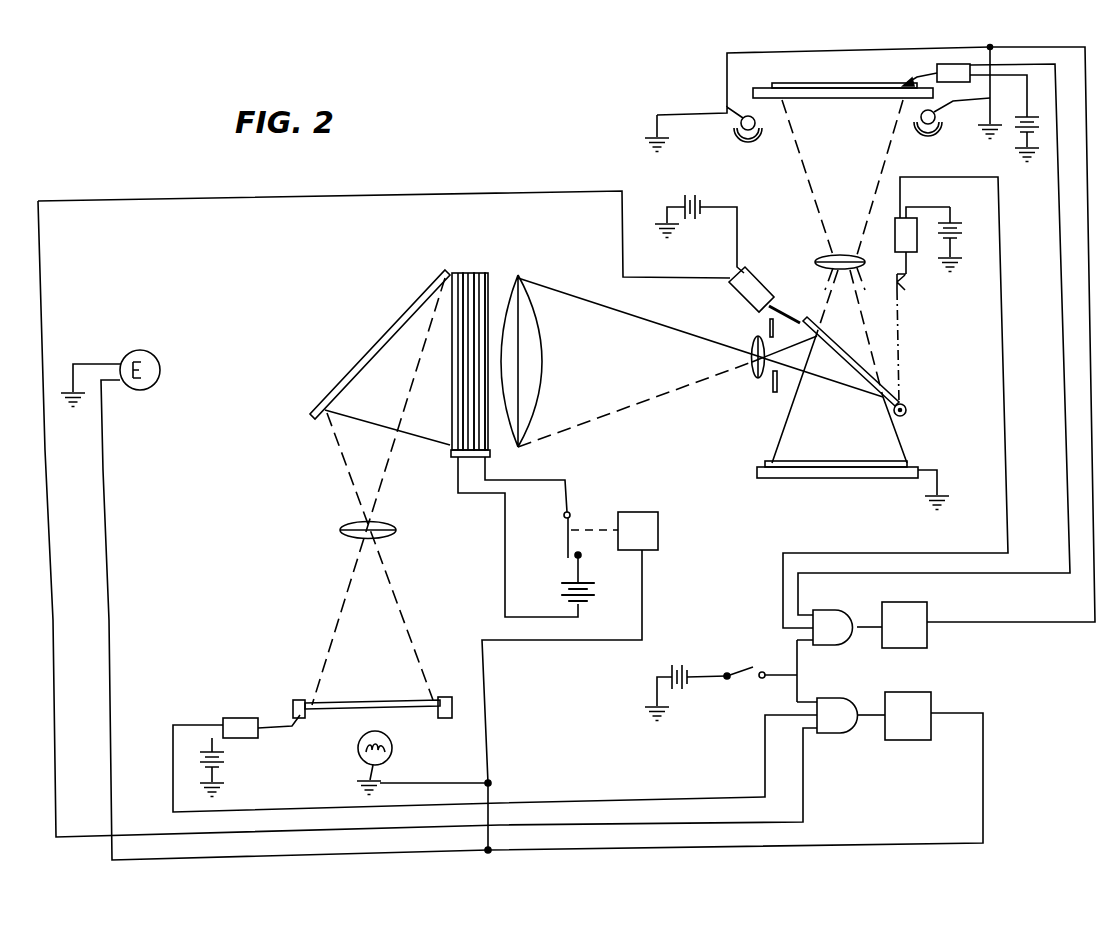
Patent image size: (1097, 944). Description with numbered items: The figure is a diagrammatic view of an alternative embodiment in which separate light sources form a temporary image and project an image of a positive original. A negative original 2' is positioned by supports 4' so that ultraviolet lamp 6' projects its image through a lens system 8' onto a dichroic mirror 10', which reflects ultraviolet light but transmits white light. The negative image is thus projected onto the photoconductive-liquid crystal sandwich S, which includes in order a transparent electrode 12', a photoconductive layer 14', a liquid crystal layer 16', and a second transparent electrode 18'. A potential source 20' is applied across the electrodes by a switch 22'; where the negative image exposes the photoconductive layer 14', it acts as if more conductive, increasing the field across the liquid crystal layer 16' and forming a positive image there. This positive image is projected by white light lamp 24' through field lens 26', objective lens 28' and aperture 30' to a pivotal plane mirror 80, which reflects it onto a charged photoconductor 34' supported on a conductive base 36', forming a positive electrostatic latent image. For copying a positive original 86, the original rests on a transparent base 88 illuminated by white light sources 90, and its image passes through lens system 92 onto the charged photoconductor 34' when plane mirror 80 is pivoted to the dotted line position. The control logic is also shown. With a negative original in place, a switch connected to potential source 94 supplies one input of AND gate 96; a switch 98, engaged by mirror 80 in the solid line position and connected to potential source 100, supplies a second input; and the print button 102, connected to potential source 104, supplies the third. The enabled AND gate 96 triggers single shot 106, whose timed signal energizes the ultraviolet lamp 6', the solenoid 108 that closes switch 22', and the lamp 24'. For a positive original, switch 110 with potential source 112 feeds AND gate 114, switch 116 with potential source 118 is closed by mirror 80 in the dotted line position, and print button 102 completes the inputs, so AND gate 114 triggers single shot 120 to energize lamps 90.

The negative original 2' is at (372, 680).
The supports 4' is at (371, 677).
The ultraviolet lamp 6' is at (422, 763).
The lens system 8' is at (375, 504).
The dichroic mirror 10' is at (380, 344).
The transparent electrode 12' is at (429, 341).
The photoconductive layer 14' is at (451, 335).
The liquid crystal layer 16' is at (483, 335).
The second transparent electrode 18' is at (487, 346).
The photoconductive-liquid crystal sandwich S is at (463, 258).
The potential source 20' is at (596, 589).
The switch 22' is at (565, 529).
The white light lamp 24' is at (132, 359).
The field lens 26' is at (550, 361).
The objective lens 28' is at (728, 343).
The aperture 30' is at (768, 373).
The charged photoconductor 34' is at (836, 442).
The conductive base 36' is at (853, 494).
The pivotal plane mirror 80 is at (897, 345).
The positive original 86 is at (810, 83).
The transparent base 88 is at (880, 93).
The white light sources 90 is at (758, 126).
The lens system 92 is at (240, 718).
The potential source 94 is at (228, 760).
The AND gate 96 is at (840, 728).
The switch 98 is at (757, 270).
The potential source 100 is at (690, 195).
The print button 102 is at (740, 667).
The potential source 104 is at (678, 663).
The single shot 106 is at (905, 740).
The solenoid 108 is at (630, 512).
The switch 110 is at (937, 72).
The potential source 112 is at (1025, 130).
The AND gate 114 is at (845, 625).
The switch 116 is at (895, 240).
The potential source 118 is at (958, 230).
The single shot 120 is at (930, 612).